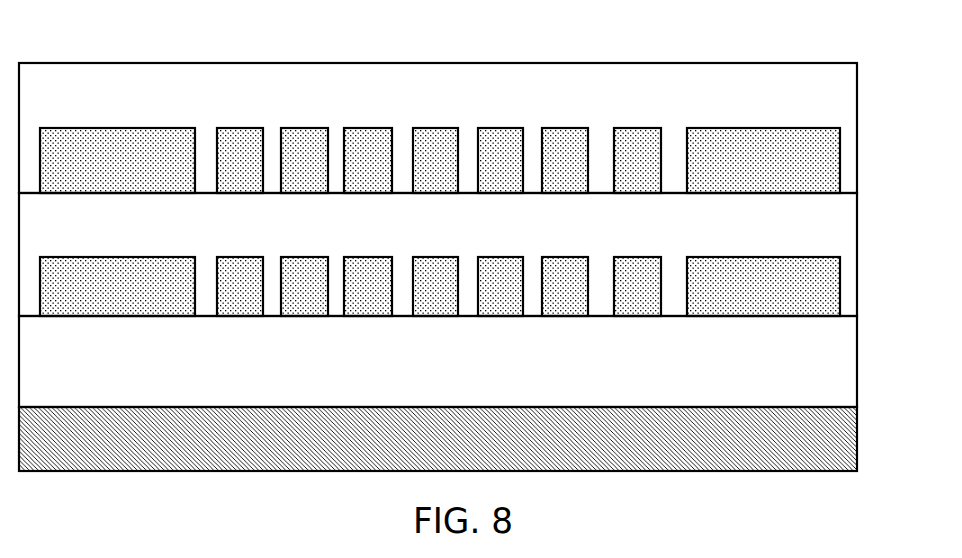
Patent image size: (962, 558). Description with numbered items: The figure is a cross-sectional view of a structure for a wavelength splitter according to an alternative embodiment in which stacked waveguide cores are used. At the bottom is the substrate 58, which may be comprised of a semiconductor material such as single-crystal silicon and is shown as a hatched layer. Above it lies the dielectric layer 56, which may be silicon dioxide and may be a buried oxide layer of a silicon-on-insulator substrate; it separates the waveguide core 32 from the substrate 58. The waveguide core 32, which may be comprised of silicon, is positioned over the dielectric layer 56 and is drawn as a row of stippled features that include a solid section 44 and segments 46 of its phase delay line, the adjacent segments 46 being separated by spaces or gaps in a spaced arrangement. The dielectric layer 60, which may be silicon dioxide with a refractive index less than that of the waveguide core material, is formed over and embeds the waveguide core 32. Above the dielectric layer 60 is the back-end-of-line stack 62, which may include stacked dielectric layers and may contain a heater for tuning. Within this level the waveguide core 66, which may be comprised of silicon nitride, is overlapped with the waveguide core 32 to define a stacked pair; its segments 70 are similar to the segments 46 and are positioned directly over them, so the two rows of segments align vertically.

The waveguide core 66 is at (108, 78).
The back-end-of-line stack 62 is at (782, 99).
The segments 70 is at (434, 148).
The waveguide core 32 is at (107, 246).
The dielectric layer 60 is at (782, 225).
The segments 46 is at (433, 273).
The solid section 44 is at (777, 288).
The dielectric layer 56 is at (802, 376).
The substrate 58 is at (802, 442).